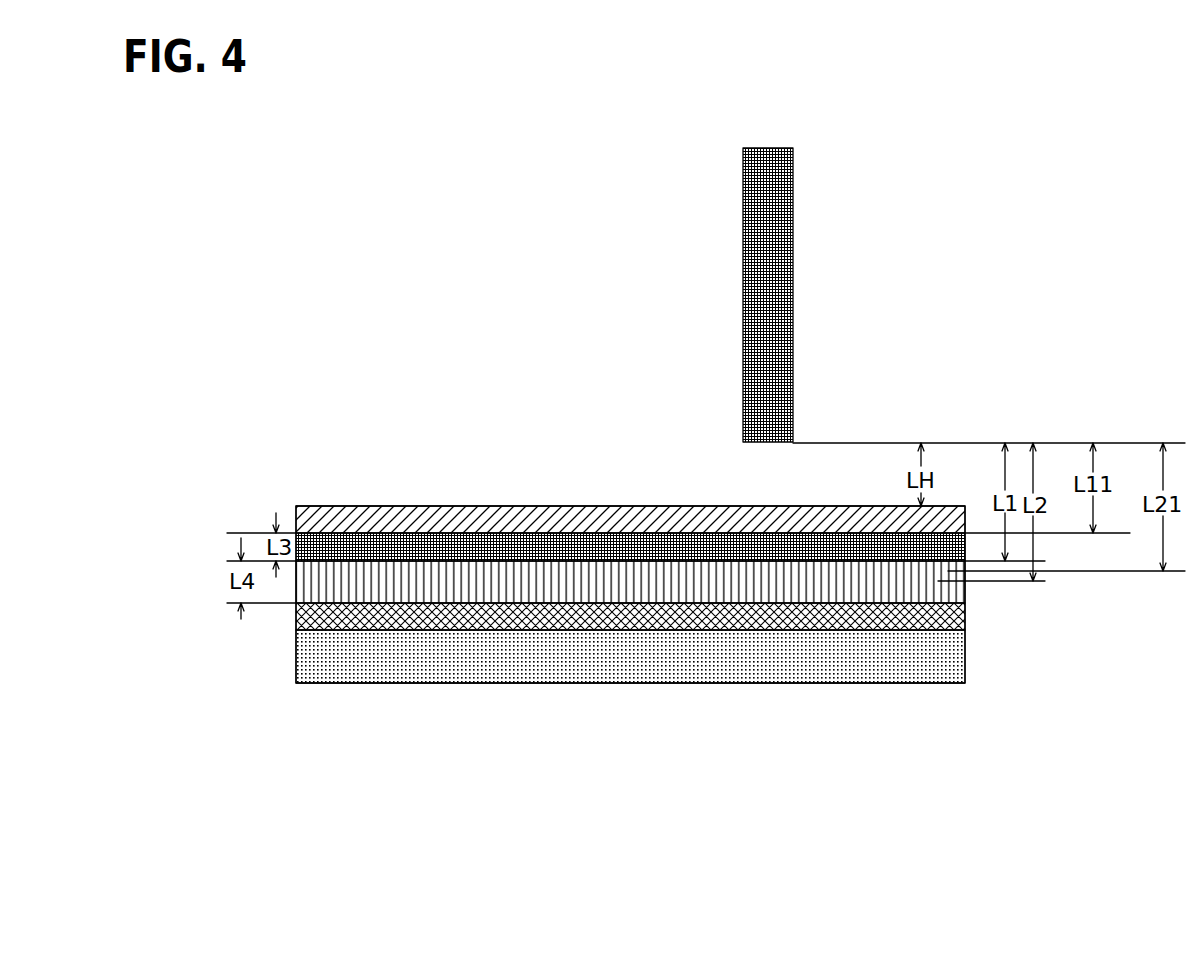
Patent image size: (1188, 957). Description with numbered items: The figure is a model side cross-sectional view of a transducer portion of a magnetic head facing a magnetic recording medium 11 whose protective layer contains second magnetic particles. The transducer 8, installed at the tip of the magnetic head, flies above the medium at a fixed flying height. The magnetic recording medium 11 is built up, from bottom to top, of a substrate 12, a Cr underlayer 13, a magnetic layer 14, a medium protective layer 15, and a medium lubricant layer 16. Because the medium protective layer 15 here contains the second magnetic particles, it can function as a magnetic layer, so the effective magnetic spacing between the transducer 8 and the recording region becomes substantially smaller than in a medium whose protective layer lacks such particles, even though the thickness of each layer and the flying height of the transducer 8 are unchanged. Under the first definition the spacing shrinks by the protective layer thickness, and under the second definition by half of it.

The transducer 8 is at (778, 203).
The magnetic recording medium 11 is at (372, 827).
The substrate 12 is at (890, 652).
The Cr underlayer 13 is at (786, 618).
The magnetic layer 14 is at (722, 580).
The medium protective layer 15 is at (652, 545).
The medium lubricant layer 16 is at (570, 523).